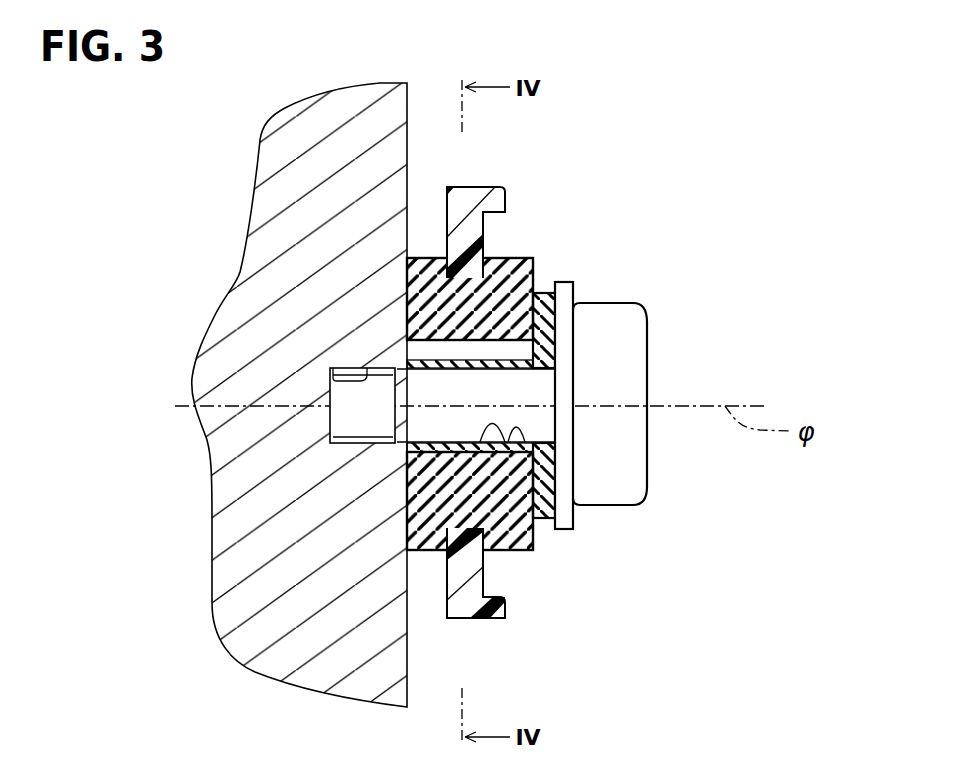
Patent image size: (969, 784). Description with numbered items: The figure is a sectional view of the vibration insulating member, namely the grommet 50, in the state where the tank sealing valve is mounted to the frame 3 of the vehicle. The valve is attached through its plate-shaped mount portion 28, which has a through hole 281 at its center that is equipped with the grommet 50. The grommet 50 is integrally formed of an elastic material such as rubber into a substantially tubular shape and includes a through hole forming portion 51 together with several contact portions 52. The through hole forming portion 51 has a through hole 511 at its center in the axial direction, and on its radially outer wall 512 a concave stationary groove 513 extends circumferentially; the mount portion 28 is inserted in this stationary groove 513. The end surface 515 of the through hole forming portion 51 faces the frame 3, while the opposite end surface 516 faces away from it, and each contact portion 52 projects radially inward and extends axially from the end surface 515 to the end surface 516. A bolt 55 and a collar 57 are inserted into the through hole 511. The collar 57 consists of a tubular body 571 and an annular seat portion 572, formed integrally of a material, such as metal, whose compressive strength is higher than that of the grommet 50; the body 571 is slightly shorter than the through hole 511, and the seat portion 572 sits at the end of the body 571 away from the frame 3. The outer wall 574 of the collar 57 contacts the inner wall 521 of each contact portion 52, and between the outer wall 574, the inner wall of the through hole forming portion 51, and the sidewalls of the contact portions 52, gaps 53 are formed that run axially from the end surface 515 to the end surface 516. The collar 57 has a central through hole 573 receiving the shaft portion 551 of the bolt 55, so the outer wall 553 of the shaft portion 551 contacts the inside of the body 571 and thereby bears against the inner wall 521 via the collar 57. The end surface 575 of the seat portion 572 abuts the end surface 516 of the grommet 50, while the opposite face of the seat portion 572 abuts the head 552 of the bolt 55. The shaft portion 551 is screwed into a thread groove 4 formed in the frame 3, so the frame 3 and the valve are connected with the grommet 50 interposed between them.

The frame 3 is at (368, 102).
The thread groove 4 is at (363, 388).
The mount portion 28 is at (460, 202).
The through hole 281 is at (457, 552).
The grommet 50 is at (547, 251).
The through hole forming portion 51 is at (422, 257).
The through hole 511 is at (490, 369).
The outer wall 512 is at (522, 257).
The stationary groove 513 is at (488, 188).
The end surface 515 is at (412, 290).
The end surface 516 is at (556, 276).
The contact portion 52 is at (420, 457).
The inner wall 521 is at (538, 518).
The gap 53 is at (437, 353).
The bolt 55 is at (649, 511).
The shaft portion 551 is at (420, 412).
The head 552 is at (587, 330).
The outer wall 553 is at (475, 318).
The collar 57 is at (574, 514).
The body 571 is at (415, 442).
The seat portion 572 is at (557, 480).
The through hole 573 is at (516, 450).
The outer wall 574 is at (480, 442).
The end surface 575 is at (523, 288).